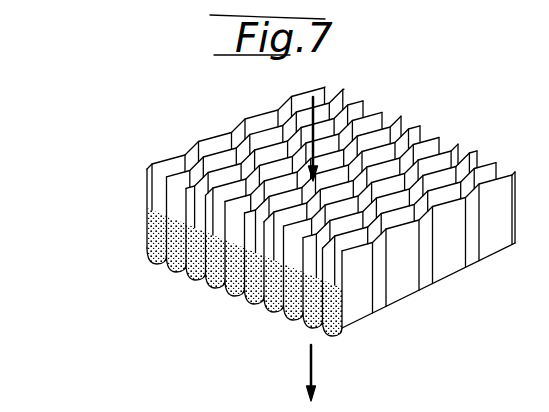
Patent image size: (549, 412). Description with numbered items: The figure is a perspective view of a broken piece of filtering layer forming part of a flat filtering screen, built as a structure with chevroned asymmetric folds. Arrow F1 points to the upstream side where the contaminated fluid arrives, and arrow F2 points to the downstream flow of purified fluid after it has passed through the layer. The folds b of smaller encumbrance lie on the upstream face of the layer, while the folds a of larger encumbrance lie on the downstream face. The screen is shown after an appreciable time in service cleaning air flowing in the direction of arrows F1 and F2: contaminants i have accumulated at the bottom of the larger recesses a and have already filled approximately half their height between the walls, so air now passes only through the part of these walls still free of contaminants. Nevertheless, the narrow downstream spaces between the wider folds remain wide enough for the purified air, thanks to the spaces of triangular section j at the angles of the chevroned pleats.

The folds of smaller encumbrance b is at (199, 180).
The spaces of triangular section j is at (188, 196).
The contaminants i is at (140, 253).
The folds of larger encumbrance a is at (194, 276).
The arrow F1 is at (316, 132).
The arrow F2 is at (329, 373).